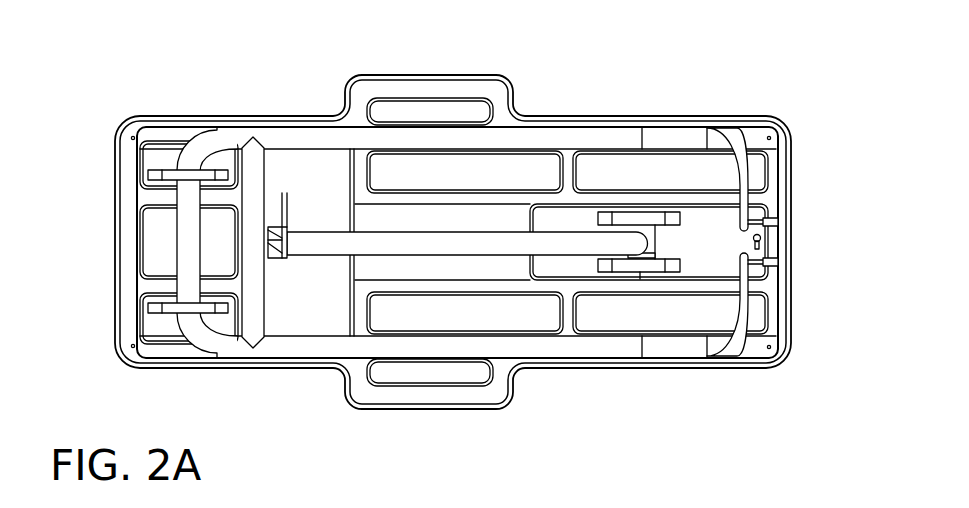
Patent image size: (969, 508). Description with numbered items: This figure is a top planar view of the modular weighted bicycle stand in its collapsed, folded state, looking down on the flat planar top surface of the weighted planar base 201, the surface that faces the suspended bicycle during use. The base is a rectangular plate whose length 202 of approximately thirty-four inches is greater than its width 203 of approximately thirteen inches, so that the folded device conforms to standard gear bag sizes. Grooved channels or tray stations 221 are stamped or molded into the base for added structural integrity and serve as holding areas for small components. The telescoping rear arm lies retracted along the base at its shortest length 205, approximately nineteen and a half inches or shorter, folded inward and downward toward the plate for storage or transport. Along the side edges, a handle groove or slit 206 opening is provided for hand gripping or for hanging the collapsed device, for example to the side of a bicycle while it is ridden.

The weighted planar base top surface 201 is at (803, 77).
The length 202 is at (778, 412).
The width 203 is at (98, 118).
The rear arm in retracted position 205 is at (566, 243).
The handle groove or slit 206 is at (482, 108).
The grooved channels or tray stations 221 is at (755, 167).